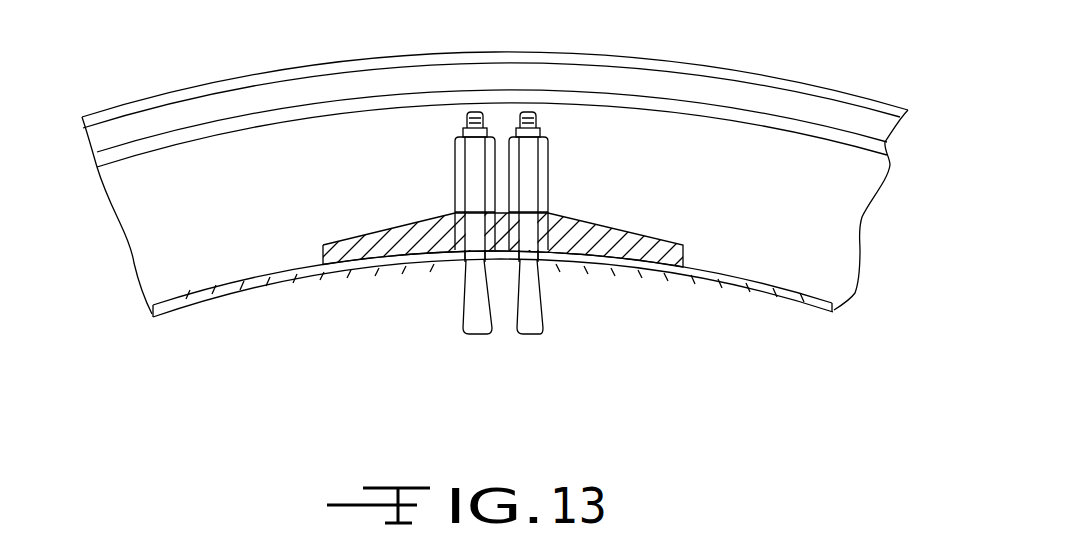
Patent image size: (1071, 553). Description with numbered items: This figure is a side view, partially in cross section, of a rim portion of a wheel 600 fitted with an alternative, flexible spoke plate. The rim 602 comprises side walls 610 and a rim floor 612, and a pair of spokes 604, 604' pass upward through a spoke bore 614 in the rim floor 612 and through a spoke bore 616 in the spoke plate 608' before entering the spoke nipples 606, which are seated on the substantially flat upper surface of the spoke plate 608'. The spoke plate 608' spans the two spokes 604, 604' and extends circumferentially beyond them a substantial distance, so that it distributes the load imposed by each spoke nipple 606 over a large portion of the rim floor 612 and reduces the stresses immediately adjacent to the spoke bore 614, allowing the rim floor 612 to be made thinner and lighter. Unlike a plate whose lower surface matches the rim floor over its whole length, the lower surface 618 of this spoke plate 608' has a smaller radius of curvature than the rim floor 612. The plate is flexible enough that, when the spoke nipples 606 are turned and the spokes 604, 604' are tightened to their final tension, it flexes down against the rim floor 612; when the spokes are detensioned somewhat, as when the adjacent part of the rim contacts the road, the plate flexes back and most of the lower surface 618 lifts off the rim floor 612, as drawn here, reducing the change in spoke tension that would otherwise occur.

The rim portion of a wheel 600 is at (500, 224).
The rim 602 is at (634, 58).
The spoke 604 is at (437, 324).
The spoke 604' is at (561, 322).
The spoke nipple 606 is at (455, 173).
The spoke plate 608' is at (505, 229).
The side walls 610 is at (227, 198).
The rim floor 612 is at (758, 275).
The spoke bore 614 is at (462, 266).
The spoke bore 616 is at (457, 219).
The lower surface 618 is at (578, 270).